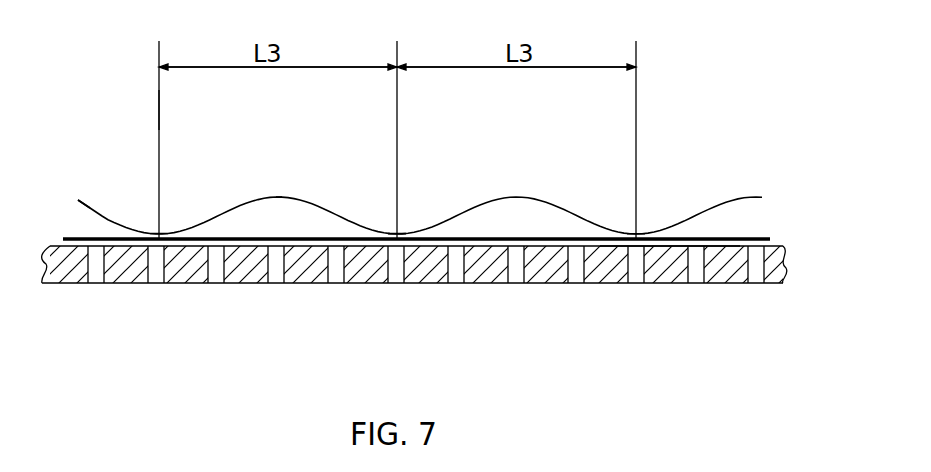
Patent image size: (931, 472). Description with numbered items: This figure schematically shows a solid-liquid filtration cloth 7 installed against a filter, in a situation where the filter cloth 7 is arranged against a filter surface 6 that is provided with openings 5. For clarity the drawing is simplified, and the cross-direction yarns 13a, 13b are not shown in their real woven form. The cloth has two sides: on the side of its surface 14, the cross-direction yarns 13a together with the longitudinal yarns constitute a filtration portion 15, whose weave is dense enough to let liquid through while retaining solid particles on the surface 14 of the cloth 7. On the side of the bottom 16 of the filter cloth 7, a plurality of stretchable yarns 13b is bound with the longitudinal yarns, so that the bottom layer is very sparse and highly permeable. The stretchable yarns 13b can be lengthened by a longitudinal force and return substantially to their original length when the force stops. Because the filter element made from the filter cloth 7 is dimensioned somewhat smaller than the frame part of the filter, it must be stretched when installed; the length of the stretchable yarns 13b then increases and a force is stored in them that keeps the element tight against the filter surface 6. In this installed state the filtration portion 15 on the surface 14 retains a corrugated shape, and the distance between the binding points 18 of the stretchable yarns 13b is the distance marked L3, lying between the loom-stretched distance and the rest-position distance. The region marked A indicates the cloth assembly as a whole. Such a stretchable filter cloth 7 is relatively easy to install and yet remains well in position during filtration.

The openings 5 is at (280, 273).
The filter surface 6 is at (427, 273).
The solid-liquid filtration cloth 7 is at (712, 130).
The cross-direction yarns 13a is at (92, 203).
The stretchable yarns 13b is at (84, 237).
The surface 14 is at (141, 103).
The filtration portion 15 is at (336, 184).
The bottom 16 is at (672, 255).
The binding points 18 is at (175, 218).
The assembly region A is at (697, 0).